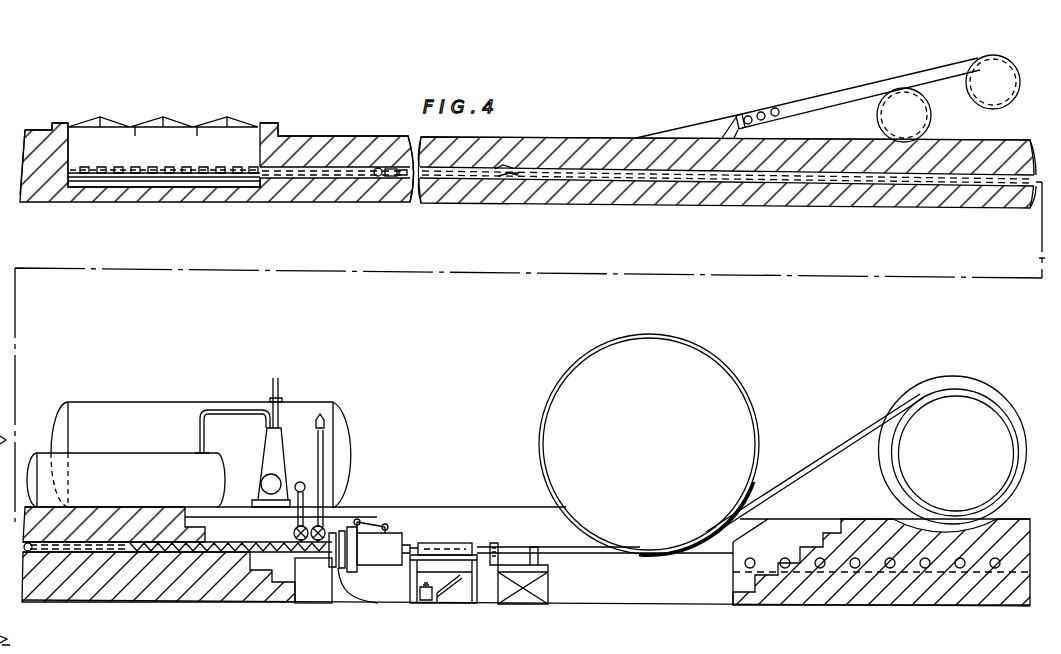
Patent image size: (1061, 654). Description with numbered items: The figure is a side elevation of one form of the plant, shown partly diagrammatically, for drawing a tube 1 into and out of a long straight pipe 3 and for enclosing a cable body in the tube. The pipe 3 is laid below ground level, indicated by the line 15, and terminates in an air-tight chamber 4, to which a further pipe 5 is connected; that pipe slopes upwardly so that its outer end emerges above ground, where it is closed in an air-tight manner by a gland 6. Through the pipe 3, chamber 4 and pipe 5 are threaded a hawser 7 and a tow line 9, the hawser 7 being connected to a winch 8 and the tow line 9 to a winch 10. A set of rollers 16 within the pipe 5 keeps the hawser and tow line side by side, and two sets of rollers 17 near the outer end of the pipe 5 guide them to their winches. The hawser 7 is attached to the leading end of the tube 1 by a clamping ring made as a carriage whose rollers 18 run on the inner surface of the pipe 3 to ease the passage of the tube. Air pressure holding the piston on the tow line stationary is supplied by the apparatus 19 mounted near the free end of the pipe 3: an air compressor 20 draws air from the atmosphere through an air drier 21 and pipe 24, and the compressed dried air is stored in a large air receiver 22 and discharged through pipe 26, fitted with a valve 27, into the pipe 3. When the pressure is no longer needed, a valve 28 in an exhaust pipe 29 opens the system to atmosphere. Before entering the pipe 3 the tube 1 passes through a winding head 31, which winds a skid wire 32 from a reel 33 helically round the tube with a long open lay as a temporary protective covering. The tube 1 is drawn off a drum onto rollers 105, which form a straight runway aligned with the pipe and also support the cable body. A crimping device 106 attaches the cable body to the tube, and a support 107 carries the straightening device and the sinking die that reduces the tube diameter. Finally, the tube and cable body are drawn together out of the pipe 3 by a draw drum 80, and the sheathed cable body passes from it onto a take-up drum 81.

The tube 1 is at (848, 447).
The pipe 3 is at (920, 184).
The air-tight chamber 4 is at (214, 142).
The pipe 5 is at (667, 135).
The gland 6 is at (736, 120).
The hawser 7 is at (841, 105).
The winch 8 is at (915, 121).
The tow line 9 is at (862, 97).
The winch 10 is at (995, 68).
The line 15 is at (993, 146).
The set of rollers 16 is at (512, 162).
The sets of rollers 17 is at (776, 109).
The rollers 18 is at (376, 158).
The apparatus 19 is at (153, 413).
The air compressor 20 is at (273, 466).
The air drier 21 is at (86, 461).
The air receiver 22 is at (78, 418).
The pipe 24 is at (222, 411).
The pipe 26 is at (304, 500).
The valve 27 is at (296, 535).
The valve 28 is at (319, 532).
The exhaust pipe 29 is at (322, 435).
The winding head 31 is at (380, 565).
The skid wire 32 is at (379, 523).
The reel 33 is at (357, 551).
The draw drum 80 is at (730, 412).
The take-up drum 81 is at (913, 395).
The rollers 105 is at (893, 563).
The crimping device 106 is at (537, 560).
The support 107 is at (493, 542).